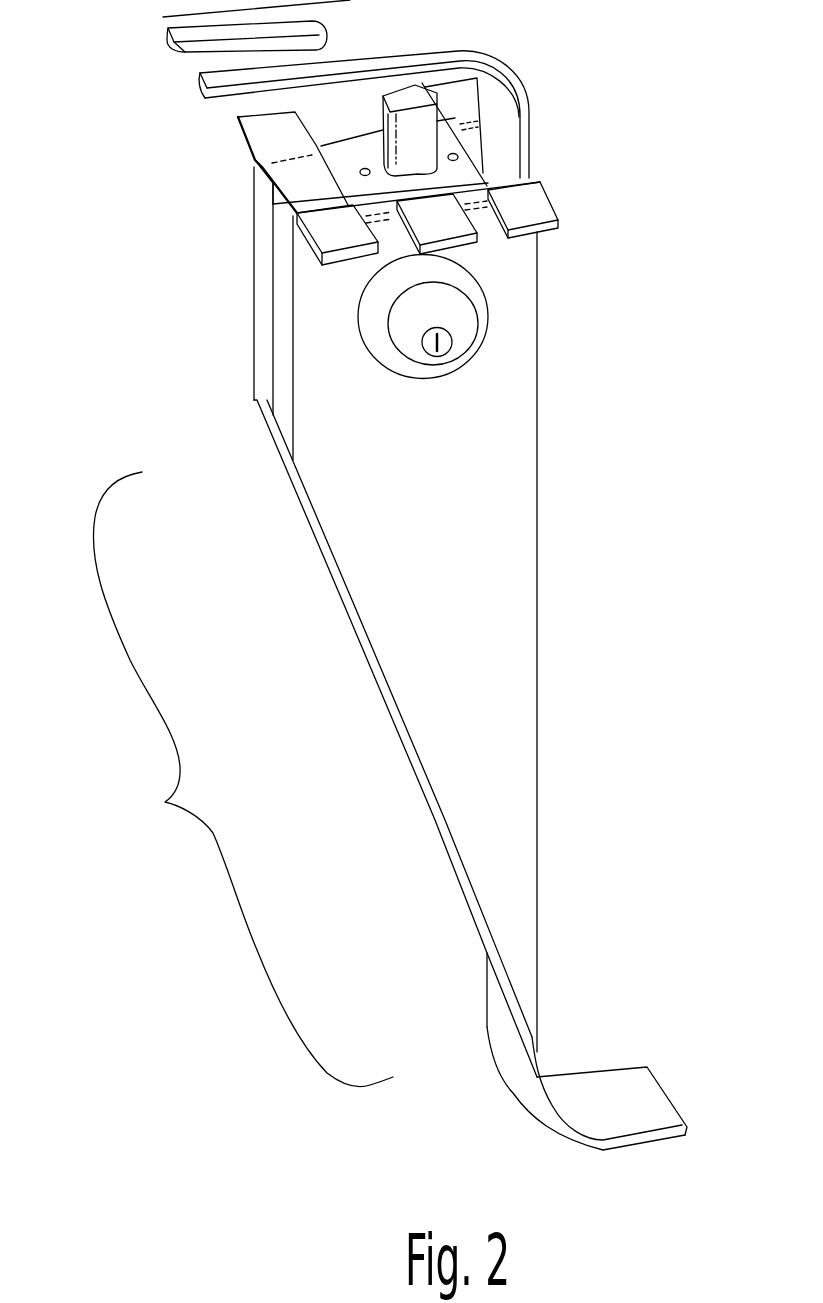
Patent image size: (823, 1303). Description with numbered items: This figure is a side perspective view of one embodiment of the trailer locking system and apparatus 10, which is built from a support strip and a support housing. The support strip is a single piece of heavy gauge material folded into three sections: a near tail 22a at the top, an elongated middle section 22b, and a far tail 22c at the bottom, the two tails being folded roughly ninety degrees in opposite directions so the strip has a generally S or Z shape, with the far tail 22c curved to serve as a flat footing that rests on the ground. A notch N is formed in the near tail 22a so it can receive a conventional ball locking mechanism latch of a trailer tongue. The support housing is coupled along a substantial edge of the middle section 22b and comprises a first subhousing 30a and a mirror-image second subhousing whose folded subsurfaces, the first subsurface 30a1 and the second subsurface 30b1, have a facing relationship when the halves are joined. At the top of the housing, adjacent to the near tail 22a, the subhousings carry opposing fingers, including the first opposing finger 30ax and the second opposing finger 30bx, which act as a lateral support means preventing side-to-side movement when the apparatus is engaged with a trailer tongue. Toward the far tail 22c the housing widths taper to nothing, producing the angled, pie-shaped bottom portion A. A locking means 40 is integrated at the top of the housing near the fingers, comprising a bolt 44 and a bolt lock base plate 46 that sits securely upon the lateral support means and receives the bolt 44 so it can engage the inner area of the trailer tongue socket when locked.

The trailer locking system and apparatus 10 is at (684, 93).
The near tail 22a is at (410, 39).
The middle section 22b is at (551, 713).
The far tail 22c is at (638, 1118).
The first subhousing 30a is at (473, 581).
The first opposing finger 30ax is at (532, 204).
The first subsurface 30a1 is at (270, 408).
The second opposing finger 30bx is at (272, 140).
The second subsurface 30b1 is at (247, 340).
The locking means 40 is at (458, 309).
The bolt 44 is at (417, 145).
The bolt lock base plate 46 is at (352, 180).
The notch N is at (170, 67).
The angled portion A is at (243, 779).